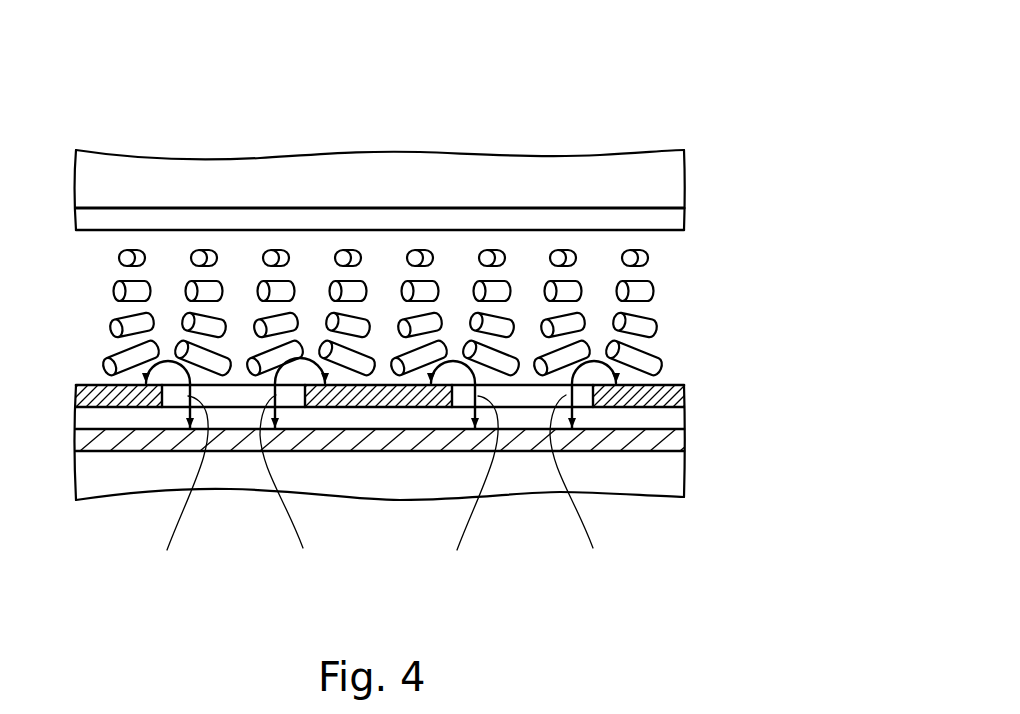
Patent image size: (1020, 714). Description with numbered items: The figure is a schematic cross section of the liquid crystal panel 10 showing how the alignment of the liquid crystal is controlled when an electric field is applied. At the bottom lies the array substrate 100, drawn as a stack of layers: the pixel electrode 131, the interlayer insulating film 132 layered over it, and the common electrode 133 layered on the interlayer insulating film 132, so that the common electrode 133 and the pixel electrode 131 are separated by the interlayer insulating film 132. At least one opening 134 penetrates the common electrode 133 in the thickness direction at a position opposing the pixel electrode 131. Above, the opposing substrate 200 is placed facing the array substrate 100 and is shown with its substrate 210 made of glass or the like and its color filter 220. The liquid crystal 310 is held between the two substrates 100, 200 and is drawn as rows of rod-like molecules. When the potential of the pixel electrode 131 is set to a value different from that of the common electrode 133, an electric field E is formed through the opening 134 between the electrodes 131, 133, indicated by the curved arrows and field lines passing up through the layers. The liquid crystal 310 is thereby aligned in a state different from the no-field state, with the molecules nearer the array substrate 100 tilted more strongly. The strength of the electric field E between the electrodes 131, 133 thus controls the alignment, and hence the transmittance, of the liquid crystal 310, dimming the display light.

The liquid crystal panel 10 is at (190, 112).
The array substrate 100 is at (641, 508).
The pixel electrode 131 is at (673, 440).
The interlayer insulating film 132 is at (675, 422).
The common electrode 133 is at (673, 395).
The opening 134 is at (237, 398).
The opposing substrate 200 is at (633, 143).
The substrate 210 is at (672, 180).
The color filter 220 is at (673, 222).
The liquid crystal 310 is at (658, 325).
The electric field E is at (377, 486).